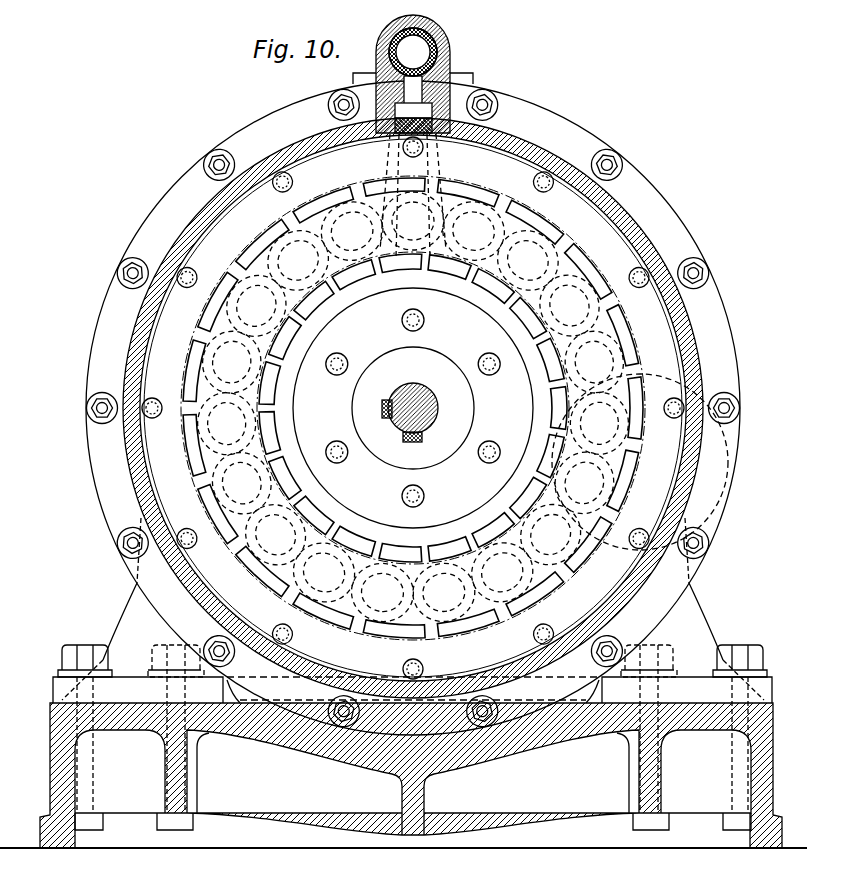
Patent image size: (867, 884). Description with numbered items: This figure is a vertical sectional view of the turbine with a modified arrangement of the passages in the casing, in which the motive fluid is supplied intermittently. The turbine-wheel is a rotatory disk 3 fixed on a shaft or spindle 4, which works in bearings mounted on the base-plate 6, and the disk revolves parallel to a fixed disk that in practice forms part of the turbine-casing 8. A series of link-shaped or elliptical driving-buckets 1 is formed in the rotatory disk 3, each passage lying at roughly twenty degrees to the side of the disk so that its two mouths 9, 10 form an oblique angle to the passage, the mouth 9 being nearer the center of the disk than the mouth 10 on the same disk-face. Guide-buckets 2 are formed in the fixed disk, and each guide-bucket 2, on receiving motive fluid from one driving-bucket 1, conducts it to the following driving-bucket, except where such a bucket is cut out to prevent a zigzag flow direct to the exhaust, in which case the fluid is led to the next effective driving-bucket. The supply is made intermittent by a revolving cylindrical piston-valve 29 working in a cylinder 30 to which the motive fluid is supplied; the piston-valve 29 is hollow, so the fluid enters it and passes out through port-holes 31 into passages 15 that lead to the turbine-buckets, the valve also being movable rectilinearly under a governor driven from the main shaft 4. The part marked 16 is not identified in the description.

The driving-buckets 1 is at (233, 326).
The guide-buckets 2 is at (233, 366).
The rotatory disk 3 is at (413, 408).
The shaft or spindle 4 is at (405, 391).
The base-plate 6 is at (403, 683).
The turbine-casing 8 is at (132, 356).
The mouth 9 is at (268, 422).
The mouth 10 is at (257, 249).
The passages 15 is at (413, 117).
The ring 16 is at (661, 437).
The piston-valve 29 is at (436, 58).
The cylinder 30 is at (391, 58).
The port-holes 31 is at (410, 73).